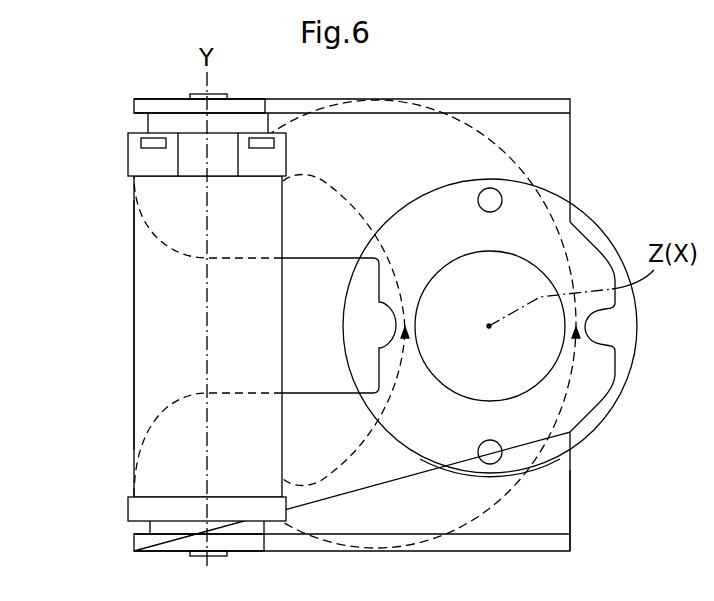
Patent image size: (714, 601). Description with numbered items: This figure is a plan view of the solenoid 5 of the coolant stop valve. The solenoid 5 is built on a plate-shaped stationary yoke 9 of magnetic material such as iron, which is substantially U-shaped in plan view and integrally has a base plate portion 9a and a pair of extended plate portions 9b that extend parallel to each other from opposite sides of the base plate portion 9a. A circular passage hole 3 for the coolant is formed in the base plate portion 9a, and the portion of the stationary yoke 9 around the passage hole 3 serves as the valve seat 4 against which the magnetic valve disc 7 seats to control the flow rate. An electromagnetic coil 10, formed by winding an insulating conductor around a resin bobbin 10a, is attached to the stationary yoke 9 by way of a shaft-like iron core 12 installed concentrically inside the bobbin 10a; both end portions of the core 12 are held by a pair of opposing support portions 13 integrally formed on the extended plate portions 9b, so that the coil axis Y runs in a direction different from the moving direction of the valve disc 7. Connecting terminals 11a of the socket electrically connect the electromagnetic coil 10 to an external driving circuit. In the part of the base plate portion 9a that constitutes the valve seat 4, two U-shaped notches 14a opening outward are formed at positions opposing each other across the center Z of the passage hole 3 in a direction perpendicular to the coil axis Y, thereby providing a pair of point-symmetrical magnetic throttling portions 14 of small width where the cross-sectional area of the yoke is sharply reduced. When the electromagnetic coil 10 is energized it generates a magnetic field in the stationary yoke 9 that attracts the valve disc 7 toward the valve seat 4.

The passage hole 3 is at (518, 295).
The valve seat 4 is at (583, 382).
The solenoid 5 is at (128, 320).
The valve disc 7 is at (423, 460).
The stationary yoke 9 is at (572, 135).
The base plate portion 9a is at (571, 512).
The extended plate portions 9b is at (157, 233).
The electromagnetic coil 10 is at (143, 374).
The bobbin 10a is at (160, 505).
The connecting terminals 11a is at (155, 150).
The core 12 is at (190, 553).
The support portions 13 is at (140, 106).
The magnetic throttling portions 14 is at (413, 323).
The notches 14a is at (393, 330).